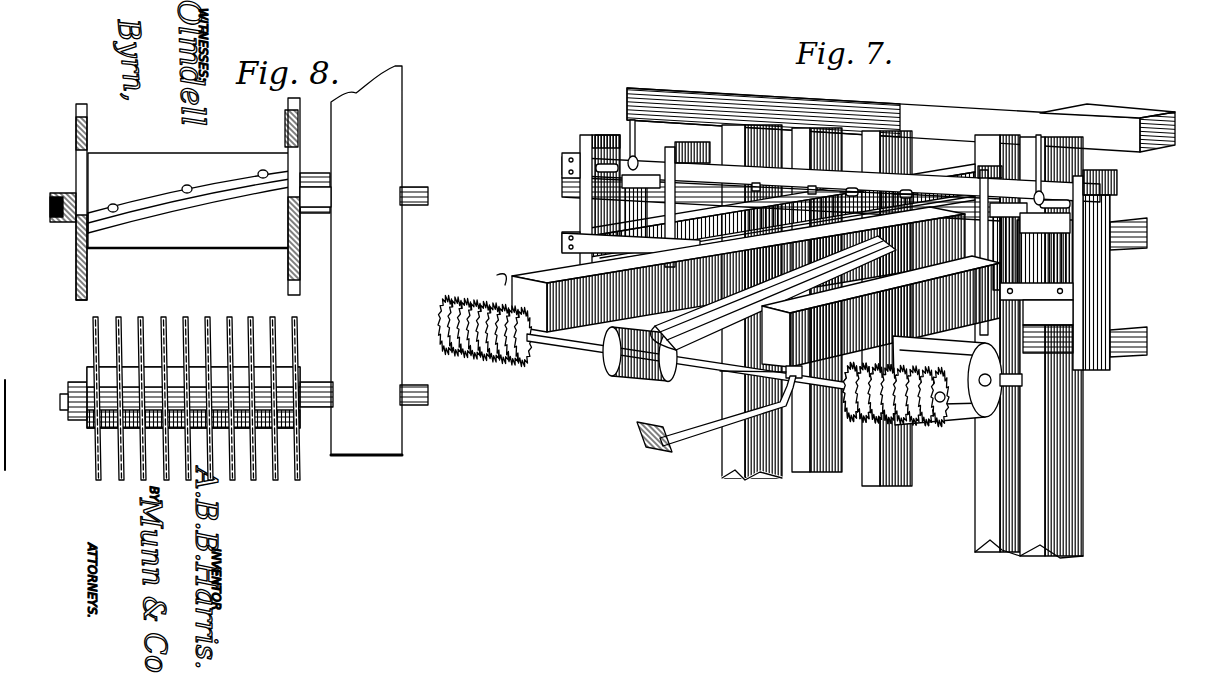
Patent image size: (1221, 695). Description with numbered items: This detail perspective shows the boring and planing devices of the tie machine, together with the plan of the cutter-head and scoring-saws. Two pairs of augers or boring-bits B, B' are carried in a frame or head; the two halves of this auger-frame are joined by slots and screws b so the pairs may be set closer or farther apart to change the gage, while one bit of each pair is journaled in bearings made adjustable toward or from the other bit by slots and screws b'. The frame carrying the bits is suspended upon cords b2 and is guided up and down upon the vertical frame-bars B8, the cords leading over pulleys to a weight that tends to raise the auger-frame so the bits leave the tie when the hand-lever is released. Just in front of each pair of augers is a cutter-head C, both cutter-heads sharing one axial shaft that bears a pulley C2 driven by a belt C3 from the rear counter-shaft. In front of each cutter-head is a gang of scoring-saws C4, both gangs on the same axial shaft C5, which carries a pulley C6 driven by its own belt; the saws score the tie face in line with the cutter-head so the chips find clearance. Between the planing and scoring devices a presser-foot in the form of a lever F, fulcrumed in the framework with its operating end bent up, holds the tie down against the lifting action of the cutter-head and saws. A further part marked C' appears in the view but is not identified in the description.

In FIG. 7, the boring-bit B is at (837, 231).
In FIG. 7, the boring-bit B' is at (842, 211).
In FIG. 7, the vertical frame-bar B8 is at (777, 477).
In FIG. 7, the slots and screws b is at (831, 175).
In FIG. 7, the slots and screws b' is at (805, 258).
In FIG. 7, the suspending-cord b2 is at (628, 126).
In FIG. 8, the cutter-head C is at (239, 199).
In FIG. 7, the cutter-head C is at (752, 342).
In FIG. 7, the cylinder shaft C' is at (688, 368).
In FIG. 7, the pulley C2 is at (773, 293).
In FIG. 7, the belt C3 is at (947, 241).
In FIG. 8, the scoring-saws C4 is at (244, 384).
In FIG. 7, the scoring-saws C4 is at (473, 360).
In FIG. 7, the axial shaft C5 is at (747, 369).
In FIG. 7, the pulley C6 is at (606, 364).
In FIG. 7, the presser-foot lever F is at (700, 442).